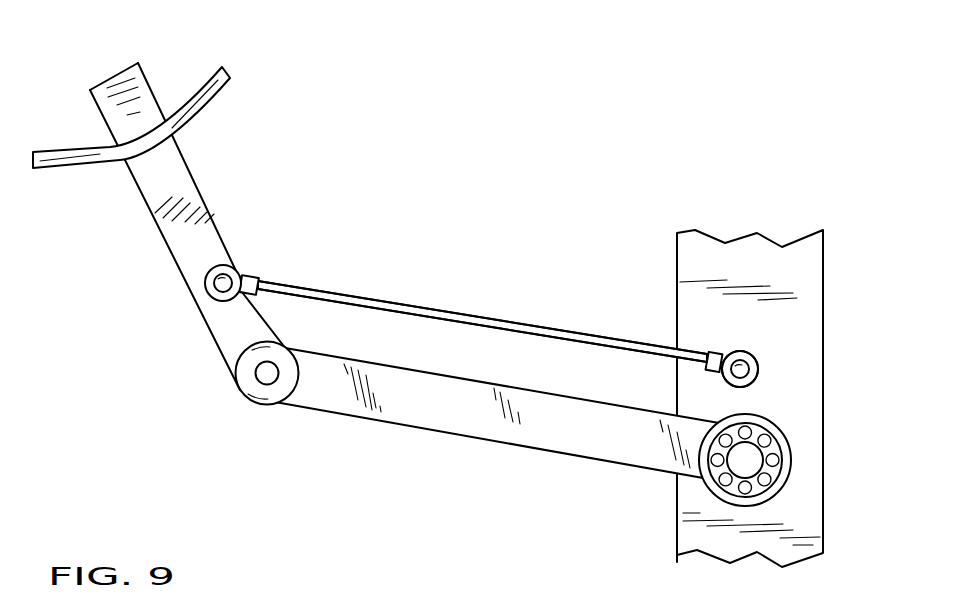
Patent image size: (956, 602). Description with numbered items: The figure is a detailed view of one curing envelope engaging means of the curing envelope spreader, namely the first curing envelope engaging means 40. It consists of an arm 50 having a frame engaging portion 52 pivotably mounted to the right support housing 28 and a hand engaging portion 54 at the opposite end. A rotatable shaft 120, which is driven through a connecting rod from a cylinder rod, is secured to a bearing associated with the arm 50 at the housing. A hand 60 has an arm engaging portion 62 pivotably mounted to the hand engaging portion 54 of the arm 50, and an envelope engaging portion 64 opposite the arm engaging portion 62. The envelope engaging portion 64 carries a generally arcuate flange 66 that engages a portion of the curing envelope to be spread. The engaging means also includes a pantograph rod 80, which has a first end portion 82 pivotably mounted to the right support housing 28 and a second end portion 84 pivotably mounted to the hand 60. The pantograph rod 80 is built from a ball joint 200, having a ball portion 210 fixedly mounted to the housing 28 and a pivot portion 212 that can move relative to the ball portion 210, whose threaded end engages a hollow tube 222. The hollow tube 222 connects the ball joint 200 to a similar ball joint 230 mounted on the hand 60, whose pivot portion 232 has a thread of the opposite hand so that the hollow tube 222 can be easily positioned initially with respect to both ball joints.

The right support housing 28 is at (693, 282).
The first curing envelope engaging means 40 is at (354, 281).
The arm 50 is at (412, 417).
The frame engaging portion 52 is at (723, 483).
The hand engaging portion 54 is at (298, 398).
The hand 60 is at (177, 220).
The arm engaging portion 62 is at (230, 327).
The envelope engaging portion 64 is at (172, 97).
The flange 66 is at (208, 95).
The pantograph rod 80 is at (433, 313).
The first end portion 82 is at (713, 346).
The second end portion 84 is at (228, 252).
The rotatable shaft 120 is at (742, 470).
The ball joint 200 is at (760, 347).
The ball portion 210 is at (759, 367).
The pivot portion 212 is at (757, 378).
The hollow tube 222 is at (493, 335).
The ball joint 230 is at (194, 298).
The pivot portion 232 is at (235, 262).